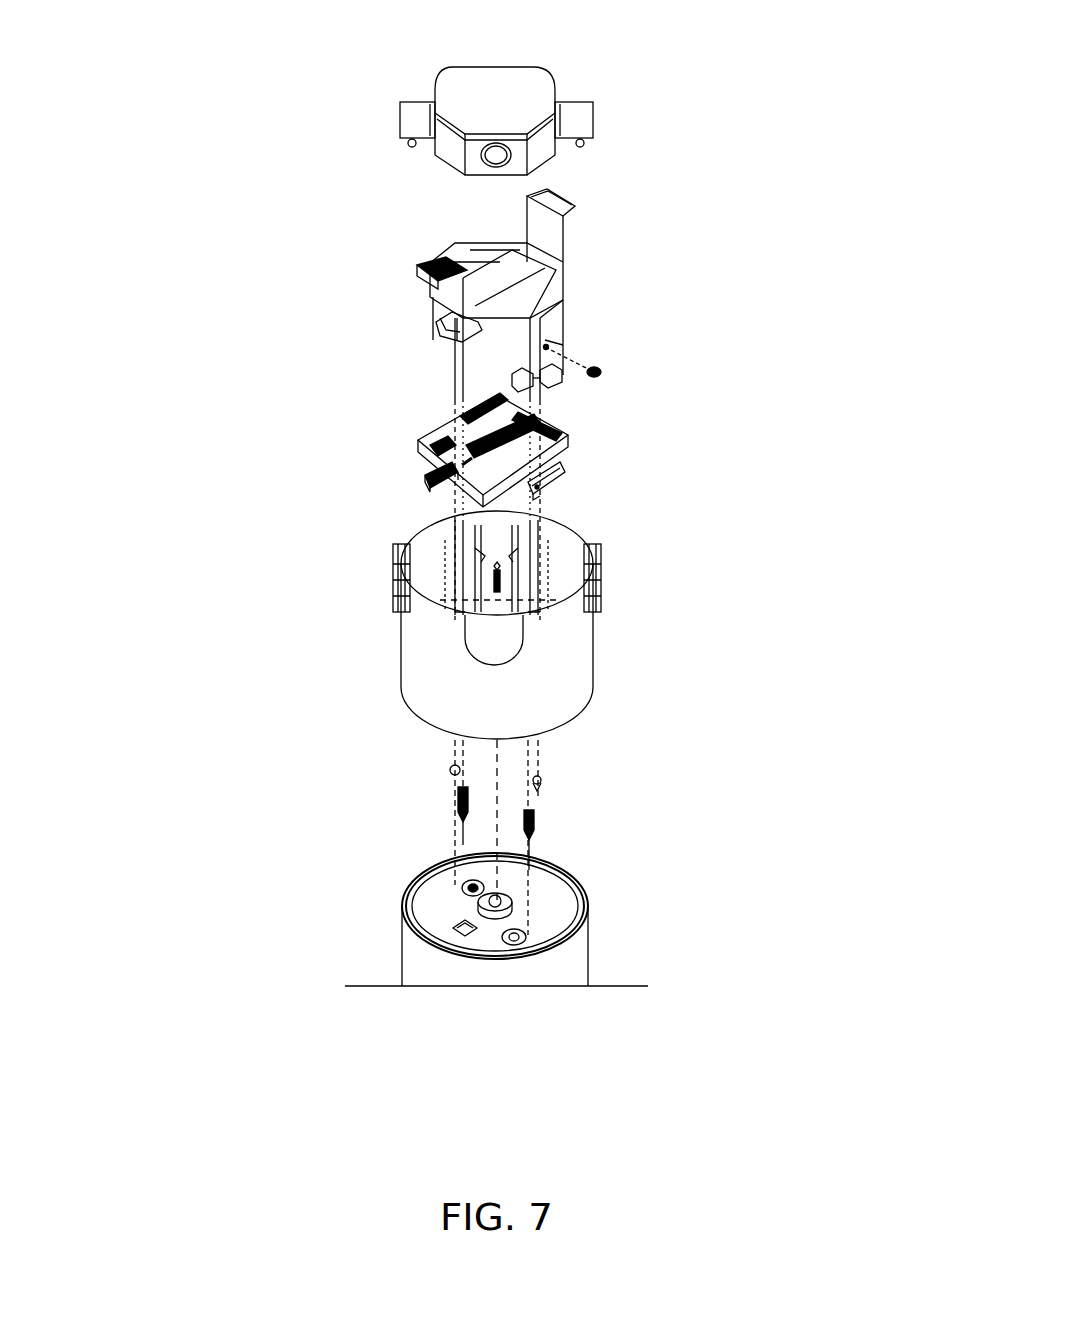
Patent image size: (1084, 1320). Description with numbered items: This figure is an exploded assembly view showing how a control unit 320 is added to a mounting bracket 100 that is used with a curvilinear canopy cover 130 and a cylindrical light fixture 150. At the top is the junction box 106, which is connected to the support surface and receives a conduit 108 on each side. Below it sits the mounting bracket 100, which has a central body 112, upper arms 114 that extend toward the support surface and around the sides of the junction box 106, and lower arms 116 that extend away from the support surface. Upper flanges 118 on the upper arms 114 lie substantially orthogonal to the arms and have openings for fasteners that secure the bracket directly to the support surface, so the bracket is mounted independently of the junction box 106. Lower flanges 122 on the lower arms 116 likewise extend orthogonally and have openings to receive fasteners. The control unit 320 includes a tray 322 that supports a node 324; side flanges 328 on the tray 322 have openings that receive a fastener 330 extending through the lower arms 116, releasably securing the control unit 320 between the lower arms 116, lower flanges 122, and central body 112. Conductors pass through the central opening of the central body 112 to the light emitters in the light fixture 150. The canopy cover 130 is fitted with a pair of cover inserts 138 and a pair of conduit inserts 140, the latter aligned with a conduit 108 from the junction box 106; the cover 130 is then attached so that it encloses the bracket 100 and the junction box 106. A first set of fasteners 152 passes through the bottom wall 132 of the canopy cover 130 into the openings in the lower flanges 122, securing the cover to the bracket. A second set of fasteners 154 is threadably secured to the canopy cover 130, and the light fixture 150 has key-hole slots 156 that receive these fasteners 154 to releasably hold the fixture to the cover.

The mounting bracket 100 is at (624, 252).
The junction box 106 is at (441, 69).
The conduit 108 is at (590, 98).
The central body 112 is at (560, 262).
The upper arm 114 is at (430, 292).
The lower arm 116 is at (563, 322).
The upper flange 118 is at (426, 261).
The lower flange 122 is at (430, 330).
The canopy cover 130 is at (591, 684).
The bottom wall 132 is at (418, 716).
The cover insert 138 is at (510, 652).
The conduit insert 140 is at (398, 578).
The light fixture 150 is at (568, 977).
The first set of fasteners 152 is at (455, 770).
The second set of fasteners 154 is at (535, 838).
The key-hole slot 156 is at (522, 940).
The control unit 320 is at (378, 388).
The tray 322 is at (560, 461).
The node 324 is at (420, 443).
The side flange 328 is at (562, 470).
The fastener 330 is at (603, 373).